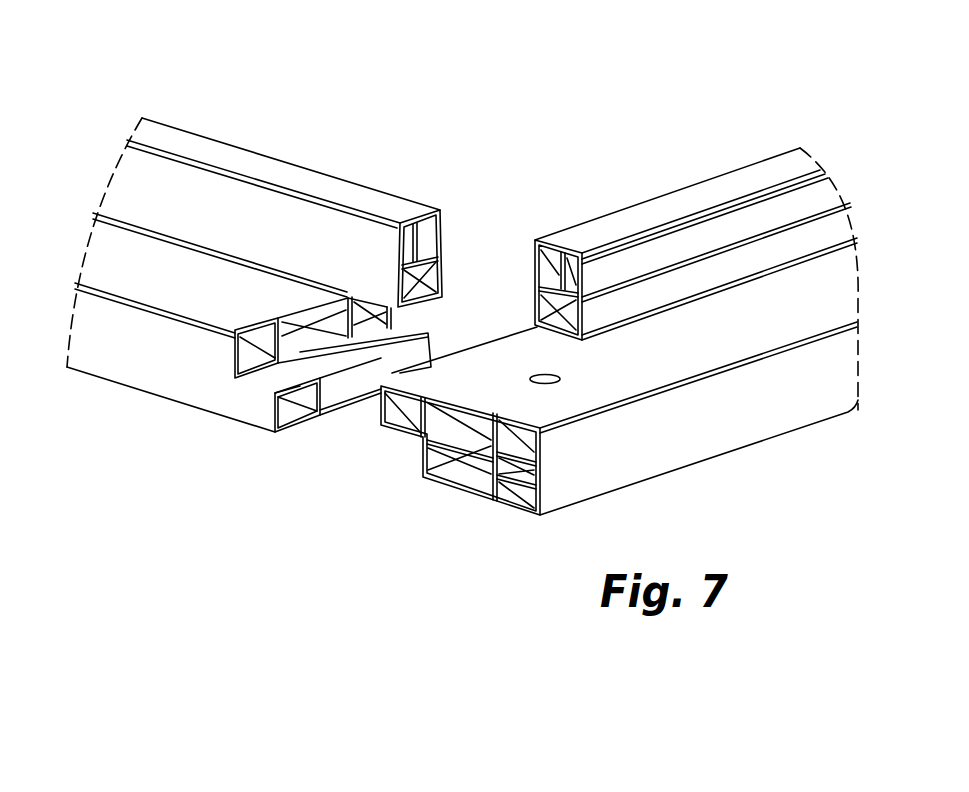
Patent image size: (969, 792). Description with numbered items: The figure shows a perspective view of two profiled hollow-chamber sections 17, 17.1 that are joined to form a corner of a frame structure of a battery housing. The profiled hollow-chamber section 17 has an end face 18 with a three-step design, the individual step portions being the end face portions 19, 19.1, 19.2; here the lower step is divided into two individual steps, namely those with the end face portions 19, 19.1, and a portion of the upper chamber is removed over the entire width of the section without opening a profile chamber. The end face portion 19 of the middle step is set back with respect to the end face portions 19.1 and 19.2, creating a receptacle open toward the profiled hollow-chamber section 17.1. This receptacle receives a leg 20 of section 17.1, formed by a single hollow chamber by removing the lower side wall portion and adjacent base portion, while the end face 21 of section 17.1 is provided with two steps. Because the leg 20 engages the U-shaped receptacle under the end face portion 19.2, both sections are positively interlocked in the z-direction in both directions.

The profiled hollow-chamber section 17 is at (355, 163).
The profiled hollow-chamber section 17.1 is at (642, 178).
The end face 18 is at (248, 428).
The end face portion 19 is at (232, 362).
The end face portion 19.1 is at (270, 418).
The end face portion 19.2 is at (440, 230).
The leg 20 is at (399, 434).
The end face 21 is at (480, 434).